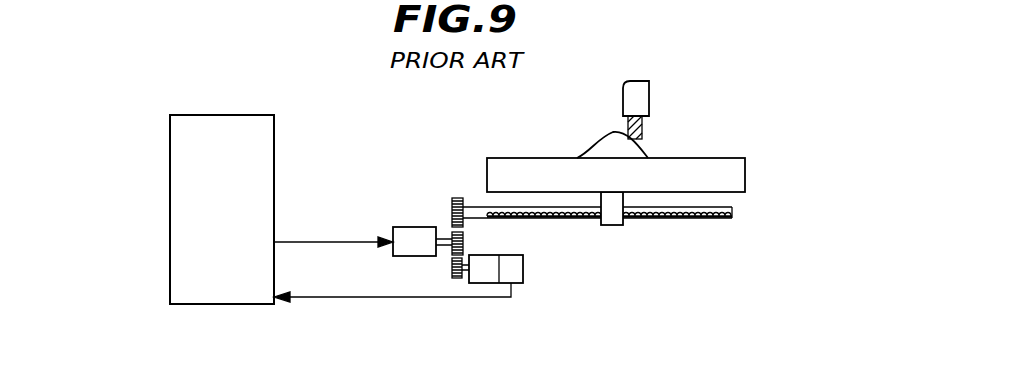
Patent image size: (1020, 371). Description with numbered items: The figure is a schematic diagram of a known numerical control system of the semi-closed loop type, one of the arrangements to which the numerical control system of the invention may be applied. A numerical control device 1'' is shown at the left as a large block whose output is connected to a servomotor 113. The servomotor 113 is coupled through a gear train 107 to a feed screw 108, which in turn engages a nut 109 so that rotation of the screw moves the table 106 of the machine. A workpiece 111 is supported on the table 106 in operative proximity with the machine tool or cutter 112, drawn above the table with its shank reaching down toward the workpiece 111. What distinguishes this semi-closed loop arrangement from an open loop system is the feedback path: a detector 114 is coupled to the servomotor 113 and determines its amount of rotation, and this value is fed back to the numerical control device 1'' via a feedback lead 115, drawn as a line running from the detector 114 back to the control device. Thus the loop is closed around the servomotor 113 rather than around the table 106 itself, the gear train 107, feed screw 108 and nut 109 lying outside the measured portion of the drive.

The numerical control device 1'' is at (151, 209).
The table 106 is at (708, 174).
The gear train 107 is at (465, 231).
The feed screw 108 is at (690, 221).
The nut 109 is at (612, 218).
The workpiece 111 is at (603, 149).
The cutter 112 is at (638, 88).
The servomotor 113 is at (413, 247).
The detector 114 is at (518, 268).
The feedback lead 115 is at (309, 297).